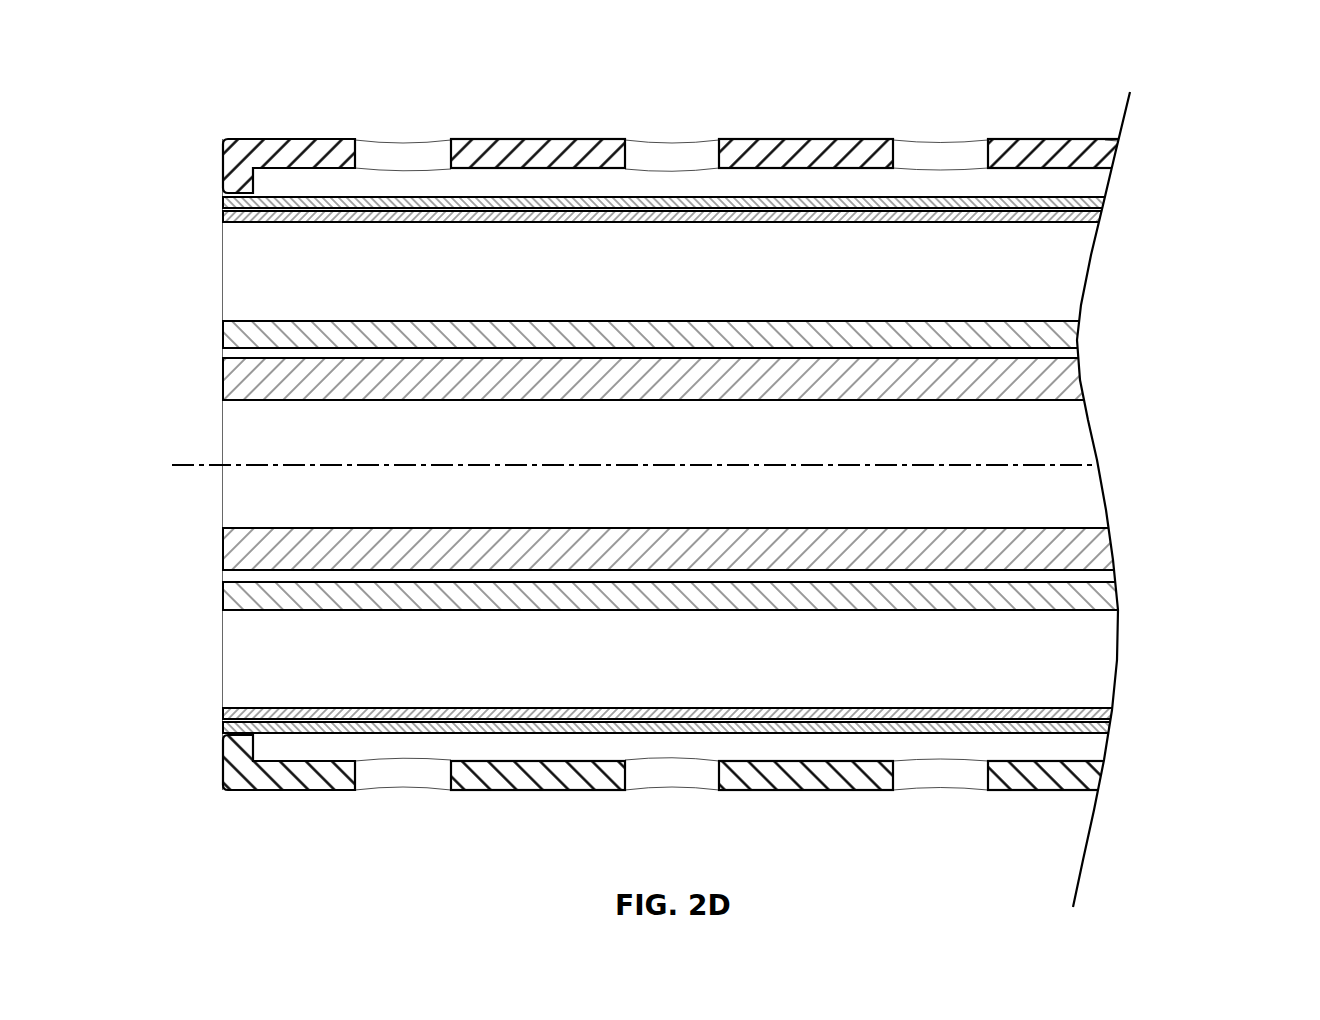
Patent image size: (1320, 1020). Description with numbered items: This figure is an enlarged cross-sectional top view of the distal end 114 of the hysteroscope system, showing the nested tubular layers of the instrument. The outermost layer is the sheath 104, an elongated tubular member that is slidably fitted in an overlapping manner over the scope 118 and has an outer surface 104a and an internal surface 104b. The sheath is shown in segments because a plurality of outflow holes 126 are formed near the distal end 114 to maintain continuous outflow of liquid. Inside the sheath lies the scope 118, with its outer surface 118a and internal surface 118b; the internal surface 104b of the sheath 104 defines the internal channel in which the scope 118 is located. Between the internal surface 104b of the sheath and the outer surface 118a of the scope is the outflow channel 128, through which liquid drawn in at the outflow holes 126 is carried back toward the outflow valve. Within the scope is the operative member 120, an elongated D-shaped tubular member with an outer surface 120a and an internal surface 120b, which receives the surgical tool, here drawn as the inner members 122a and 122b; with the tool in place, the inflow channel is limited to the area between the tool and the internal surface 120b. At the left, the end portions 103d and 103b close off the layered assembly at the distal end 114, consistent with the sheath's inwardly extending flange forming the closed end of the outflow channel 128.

The distal end 114 is at (1170, 69).
The end block 103d is at (223, 154).
The end block 103b is at (223, 764).
The sheath 104 is at (491, 160).
The outer surface of the sheath 104a is at (600, 140).
The internal surface of the sheath 104b is at (533, 169).
The scope 118 is at (385, 196).
The outer surface of the scope 118a is at (270, 193).
The internal surface of the scope 118b is at (319, 209).
The operative member 120 is at (757, 212).
The outer surface of the operative member 120a is at (798, 212).
The internal surface of the operative member 120b is at (814, 222).
The inner layer 122a is at (1062, 337).
The inner layer 122b is at (1065, 382).
The outflow holes 126 is at (915, 150).
The outflow channel 128 is at (1060, 184).